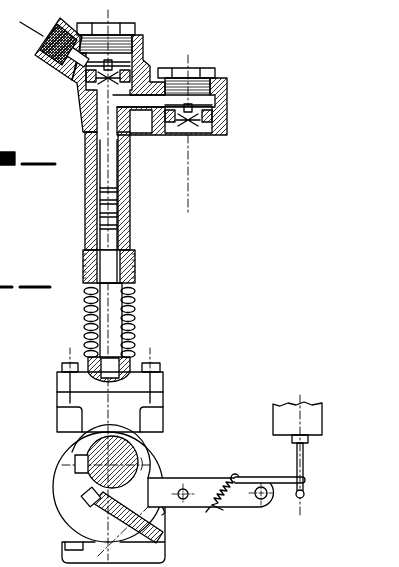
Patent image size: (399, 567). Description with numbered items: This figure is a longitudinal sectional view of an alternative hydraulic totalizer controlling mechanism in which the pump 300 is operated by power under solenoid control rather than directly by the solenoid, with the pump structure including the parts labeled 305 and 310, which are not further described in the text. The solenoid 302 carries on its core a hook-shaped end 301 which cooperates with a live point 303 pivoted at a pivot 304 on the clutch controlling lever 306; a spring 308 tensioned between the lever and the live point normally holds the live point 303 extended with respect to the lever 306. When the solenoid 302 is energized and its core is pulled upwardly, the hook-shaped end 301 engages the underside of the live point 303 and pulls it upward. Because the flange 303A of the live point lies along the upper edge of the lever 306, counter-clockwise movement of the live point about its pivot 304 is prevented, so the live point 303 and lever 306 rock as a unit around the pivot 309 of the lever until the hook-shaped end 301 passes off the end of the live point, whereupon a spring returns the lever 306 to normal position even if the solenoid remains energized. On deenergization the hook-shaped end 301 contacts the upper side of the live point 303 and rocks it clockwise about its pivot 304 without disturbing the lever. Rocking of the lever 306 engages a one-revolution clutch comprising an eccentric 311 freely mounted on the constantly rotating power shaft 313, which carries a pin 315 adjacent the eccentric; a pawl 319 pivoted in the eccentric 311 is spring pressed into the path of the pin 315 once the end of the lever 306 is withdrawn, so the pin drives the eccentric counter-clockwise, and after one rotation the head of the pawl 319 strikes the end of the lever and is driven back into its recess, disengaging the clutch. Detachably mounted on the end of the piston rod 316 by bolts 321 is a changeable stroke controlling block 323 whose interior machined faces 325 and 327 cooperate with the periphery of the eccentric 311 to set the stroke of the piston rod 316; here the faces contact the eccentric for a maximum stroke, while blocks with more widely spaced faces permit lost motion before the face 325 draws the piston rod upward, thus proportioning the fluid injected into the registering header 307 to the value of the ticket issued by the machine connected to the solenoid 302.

The pump 300 is at (130, 174).
The hook-shaped end 301 is at (305, 487).
The solenoid 302 is at (320, 422).
The live point 303 is at (287, 477).
The flange 303A is at (245, 476).
The pivot 304 is at (268, 510).
The inlet fitting 305 is at (45, 44).
The clutch controlling lever 306 is at (172, 478).
The registering header 307 is at (198, 149).
The spring 308 is at (222, 478).
The pivot 309 is at (188, 508).
The valve body 310 is at (100, 128).
The eccentric 311 is at (37, 495).
The power shaft 313 is at (128, 450).
The pin 315 is at (75, 460).
The piston rod 316 is at (113, 236).
The pawl 319 is at (110, 510).
The bolts 321 is at (68, 365).
The stroke controlling block 323 is at (152, 398).
The face 325 is at (60, 432).
The face 327 is at (80, 548).